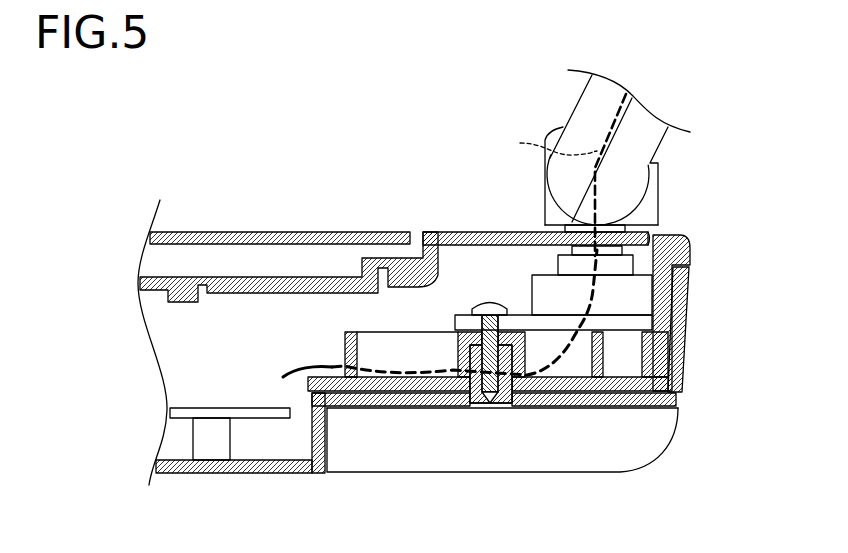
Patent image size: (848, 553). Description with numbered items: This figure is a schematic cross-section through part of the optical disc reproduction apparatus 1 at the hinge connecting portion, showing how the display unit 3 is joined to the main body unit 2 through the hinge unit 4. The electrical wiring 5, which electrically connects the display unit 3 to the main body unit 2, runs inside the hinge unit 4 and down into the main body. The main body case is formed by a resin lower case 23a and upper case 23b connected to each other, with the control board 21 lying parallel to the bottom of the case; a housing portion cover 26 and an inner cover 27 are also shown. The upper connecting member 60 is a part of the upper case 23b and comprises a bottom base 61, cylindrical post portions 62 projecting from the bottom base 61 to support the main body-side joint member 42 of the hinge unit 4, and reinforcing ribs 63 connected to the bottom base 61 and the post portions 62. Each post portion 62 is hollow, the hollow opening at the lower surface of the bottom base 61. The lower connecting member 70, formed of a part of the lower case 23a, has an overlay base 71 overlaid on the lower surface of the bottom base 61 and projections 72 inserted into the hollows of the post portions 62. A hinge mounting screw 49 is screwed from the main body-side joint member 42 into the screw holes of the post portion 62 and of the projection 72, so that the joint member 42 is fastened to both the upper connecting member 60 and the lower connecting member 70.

The optical disc reproduction apparatus 1 is at (163, 108).
The main body unit 2 is at (694, 350).
The display unit 3 is at (572, 103).
The hinge unit 4 is at (640, 261).
The electrical wiring 5 is at (505, 152).
The control board 21 is at (215, 413).
The lower case 23a is at (262, 463).
The upper case 23b is at (724, 199).
The housing portion cover 26 is at (445, 232).
The inner cover 27 is at (258, 232).
The main body-side joint member 42 is at (468, 323).
The hinge mounting screw 49 is at (487, 302).
The upper connecting member 60 is at (561, 346).
The bottom base 61 is at (570, 385).
The post portion 62 is at (458, 368).
The reinforcing rib 63 is at (357, 367).
The lower connecting member 70 is at (570, 412).
The overlay base 71 is at (540, 408).
The projection 72 is at (473, 380).